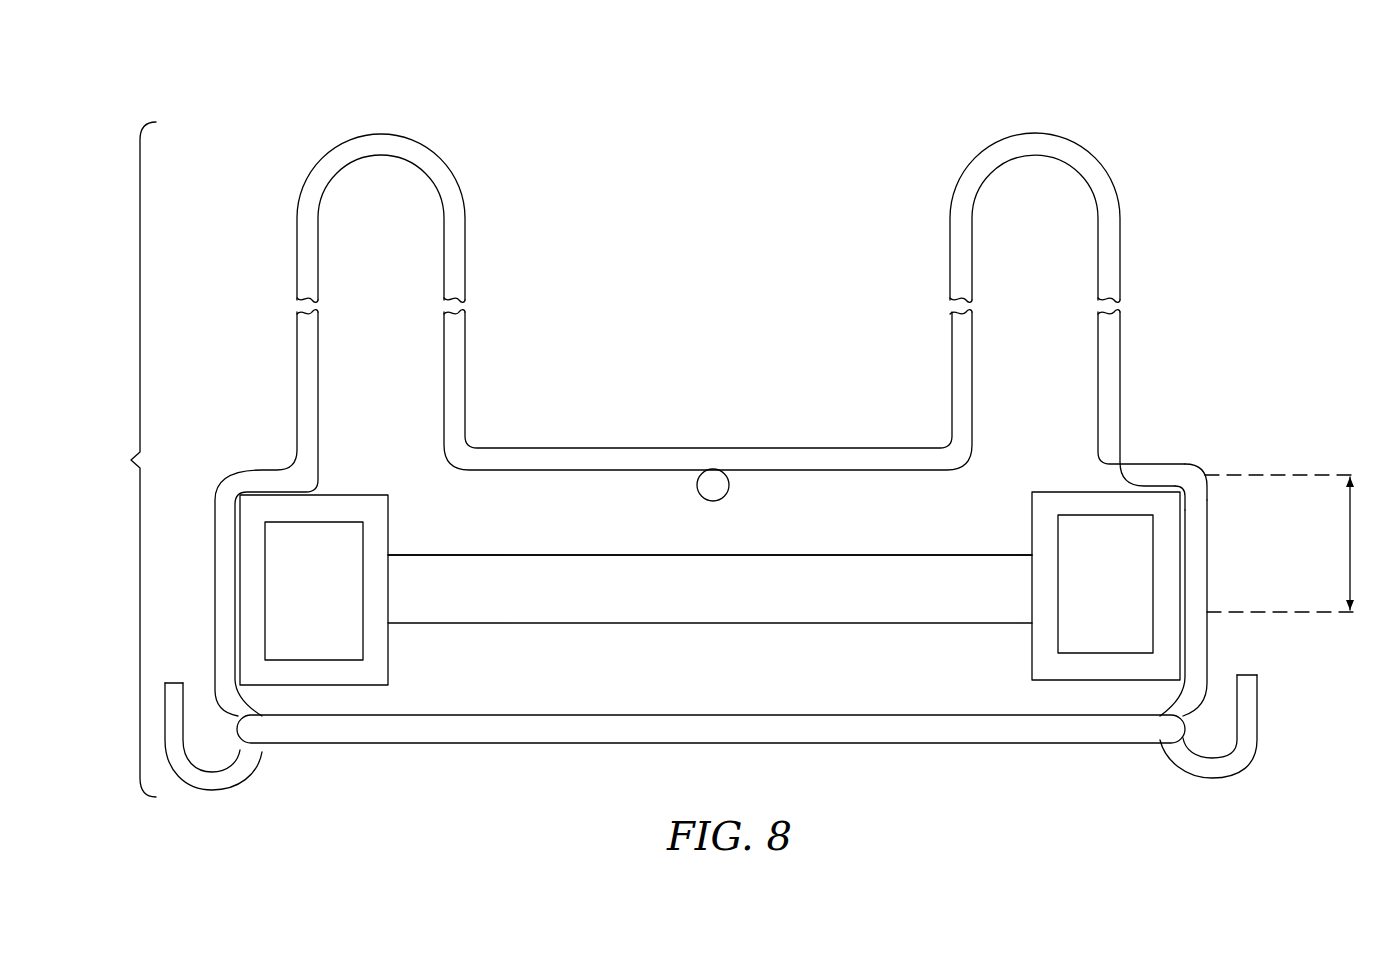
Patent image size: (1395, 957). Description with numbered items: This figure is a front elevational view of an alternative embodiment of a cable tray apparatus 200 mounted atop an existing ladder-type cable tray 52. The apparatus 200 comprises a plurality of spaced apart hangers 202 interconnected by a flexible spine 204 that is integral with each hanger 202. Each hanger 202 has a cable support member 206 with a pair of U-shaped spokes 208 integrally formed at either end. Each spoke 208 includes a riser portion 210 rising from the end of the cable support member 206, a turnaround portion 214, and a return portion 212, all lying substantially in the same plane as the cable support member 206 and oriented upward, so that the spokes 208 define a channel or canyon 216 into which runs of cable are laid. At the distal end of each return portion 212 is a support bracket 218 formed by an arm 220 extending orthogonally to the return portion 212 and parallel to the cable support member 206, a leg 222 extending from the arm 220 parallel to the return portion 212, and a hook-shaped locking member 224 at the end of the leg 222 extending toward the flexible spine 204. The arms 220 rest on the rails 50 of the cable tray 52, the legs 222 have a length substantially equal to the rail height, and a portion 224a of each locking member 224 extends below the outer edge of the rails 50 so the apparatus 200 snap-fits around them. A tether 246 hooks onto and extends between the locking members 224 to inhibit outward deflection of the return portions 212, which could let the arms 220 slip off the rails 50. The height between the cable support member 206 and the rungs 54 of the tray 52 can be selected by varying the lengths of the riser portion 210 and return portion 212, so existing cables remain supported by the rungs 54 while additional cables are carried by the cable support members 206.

The cable tray apparatus 200 is at (115, 459).
The hanger 202 is at (793, 386).
The flexible spine 204 is at (716, 487).
The cable support member 206 is at (594, 456).
The U-shaped spoke 208 is at (464, 191).
The riser portion 210 is at (962, 390).
The return portion 212 is at (1115, 358).
The turnaround portion 214 is at (1027, 147).
The channel or canyon 216 is at (736, 195).
The cable tray apparatus support bracket 218 is at (1242, 472).
The arm 220 is at (1153, 463).
The leg 222 is at (1211, 582).
The locking member 224 is at (1210, 762).
The portion 224a is at (257, 753).
The tether 246 is at (882, 728).
The rail 50 is at (383, 652).
The ladder-type cable tray 52 is at (718, 644).
The rung 54 is at (573, 608).